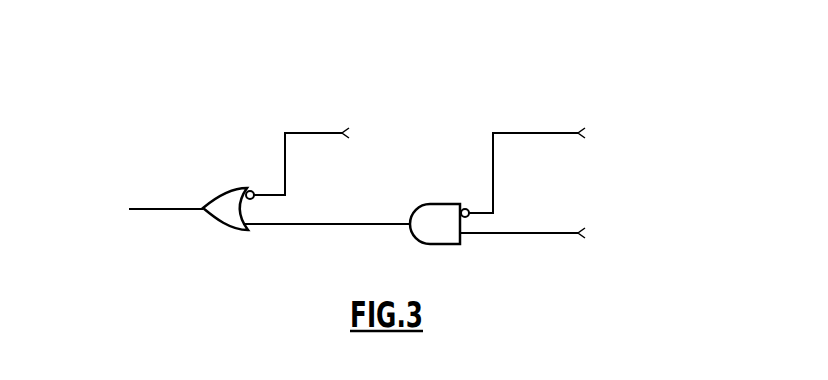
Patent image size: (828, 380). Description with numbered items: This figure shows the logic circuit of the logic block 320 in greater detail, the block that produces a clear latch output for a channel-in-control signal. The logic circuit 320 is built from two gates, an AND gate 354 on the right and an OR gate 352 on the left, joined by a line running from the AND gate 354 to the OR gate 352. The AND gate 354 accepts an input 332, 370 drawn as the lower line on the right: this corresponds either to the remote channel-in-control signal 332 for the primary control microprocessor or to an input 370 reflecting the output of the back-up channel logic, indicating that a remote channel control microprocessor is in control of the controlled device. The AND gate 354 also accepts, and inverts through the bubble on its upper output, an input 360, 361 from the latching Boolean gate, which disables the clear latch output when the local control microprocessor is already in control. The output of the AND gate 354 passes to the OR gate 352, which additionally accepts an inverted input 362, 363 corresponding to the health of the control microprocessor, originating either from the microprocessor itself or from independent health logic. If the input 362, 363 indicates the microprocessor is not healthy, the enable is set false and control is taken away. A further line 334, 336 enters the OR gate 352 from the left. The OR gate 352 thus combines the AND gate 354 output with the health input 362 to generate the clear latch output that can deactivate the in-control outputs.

The logic block 320 is at (458, 85).
The input signal 334 is at (140, 237).
The input signal 336 is at (173, 209).
The OR gate 352 is at (229, 230).
The AND gate 354 is at (440, 244).
The inverted input 362 is at (361, 152).
The inverted input 363 is at (343, 133).
The input from latching Boolean gate 360 is at (585, 161).
The input from latching Boolean gate 361 is at (579, 133).
The remote channel-in-control signal 332 is at (581, 224).
The input corresponding to output of OR gate 370 is at (579, 233).